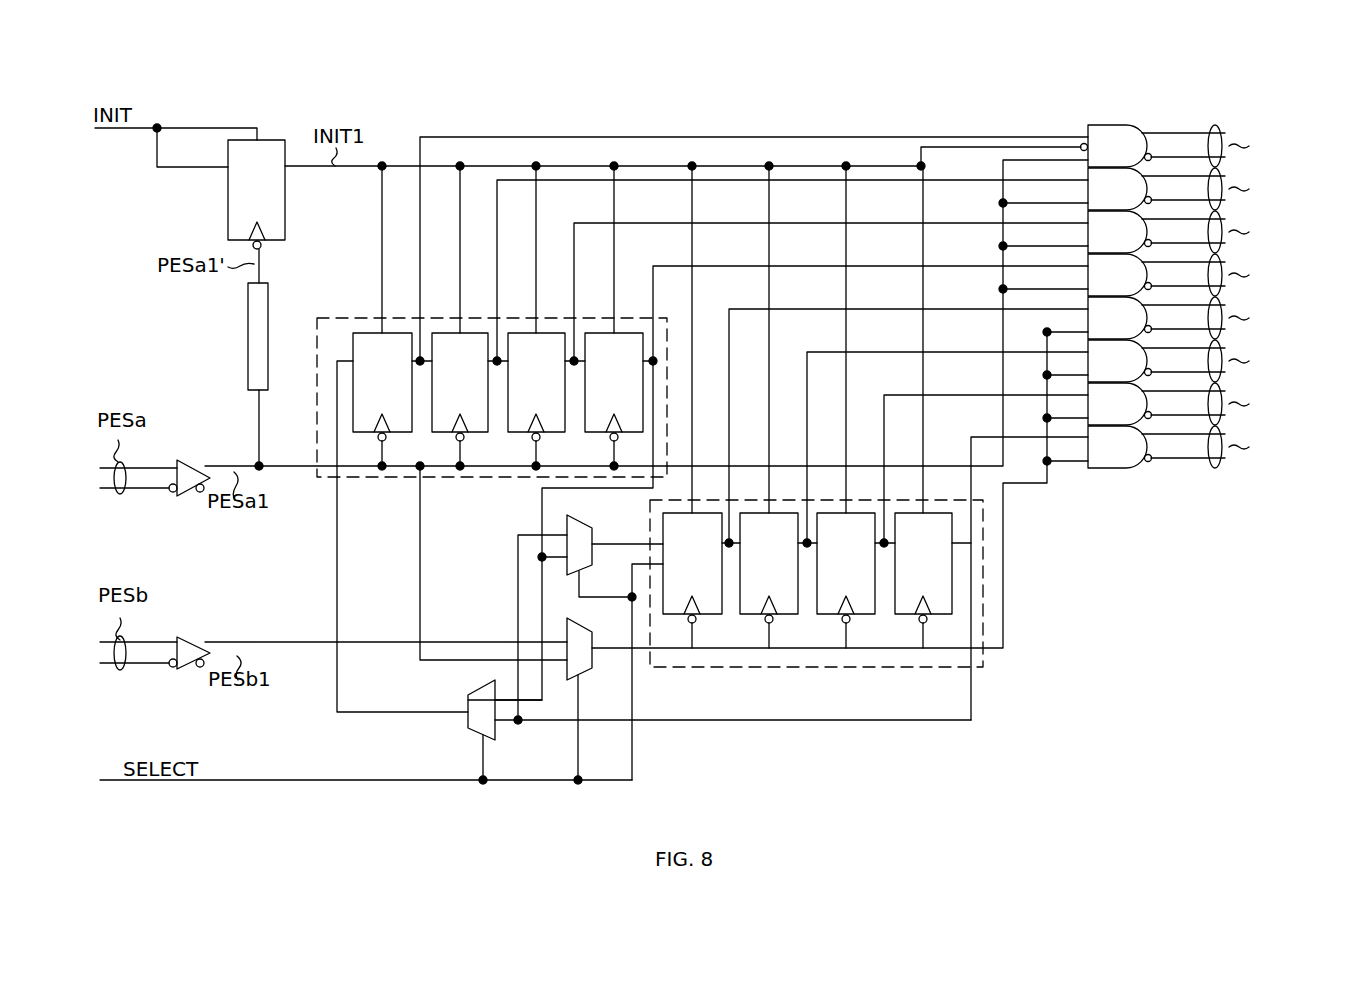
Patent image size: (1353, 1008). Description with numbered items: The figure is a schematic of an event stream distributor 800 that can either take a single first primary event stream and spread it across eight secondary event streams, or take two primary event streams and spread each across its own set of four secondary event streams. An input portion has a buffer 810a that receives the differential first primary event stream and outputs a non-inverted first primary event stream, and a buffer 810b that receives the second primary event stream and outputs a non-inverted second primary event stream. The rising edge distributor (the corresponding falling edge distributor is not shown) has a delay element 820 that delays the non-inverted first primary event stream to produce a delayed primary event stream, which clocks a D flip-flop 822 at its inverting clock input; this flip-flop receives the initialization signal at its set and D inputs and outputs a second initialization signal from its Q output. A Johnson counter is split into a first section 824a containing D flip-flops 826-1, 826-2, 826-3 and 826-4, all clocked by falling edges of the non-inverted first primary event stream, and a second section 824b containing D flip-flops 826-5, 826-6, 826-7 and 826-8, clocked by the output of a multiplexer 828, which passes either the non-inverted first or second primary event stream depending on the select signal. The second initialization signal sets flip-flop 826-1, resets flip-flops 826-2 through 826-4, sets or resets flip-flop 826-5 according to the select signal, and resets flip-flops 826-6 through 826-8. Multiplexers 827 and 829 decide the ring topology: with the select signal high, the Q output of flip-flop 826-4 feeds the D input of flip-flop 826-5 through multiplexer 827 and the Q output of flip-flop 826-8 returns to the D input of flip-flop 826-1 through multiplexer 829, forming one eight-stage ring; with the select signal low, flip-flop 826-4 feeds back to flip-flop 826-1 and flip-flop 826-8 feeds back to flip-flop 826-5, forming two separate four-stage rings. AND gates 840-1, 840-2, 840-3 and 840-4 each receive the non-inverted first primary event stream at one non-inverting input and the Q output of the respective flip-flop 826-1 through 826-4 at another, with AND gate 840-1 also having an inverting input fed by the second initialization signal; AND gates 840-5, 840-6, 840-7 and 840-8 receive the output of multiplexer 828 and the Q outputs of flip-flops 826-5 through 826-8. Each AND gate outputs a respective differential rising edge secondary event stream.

The event stream distributor 800 is at (790, 103).
The buffer 810a is at (185, 459).
The buffer 810b is at (186, 634).
The delay element 820 is at (270, 300).
The D flip-flop 822 is at (274, 136).
The first section of the Johnson counter 824a is at (318, 480).
The second section of the Johnson counter 824b is at (985, 655).
The D flip-flop 826-1 is at (383, 386).
The D flip-flop 826-2 is at (462, 386).
The D flip-flop 826-3 is at (538, 386).
The D flip-flop 826-4 is at (615, 386).
The D flip-flop 826-5 is at (693, 568).
The D flip-flop 826-6 is at (770, 568).
The D flip-flop 826-7 is at (847, 568).
The D flip-flop 826-8 is at (925, 568).
The multiplexer 827 is at (580, 516).
The multiplexer 828 is at (590, 672).
The multiplexer 829 is at (478, 687).
The AND gate 840-1 is at (1206, 146).
The AND gate 840-2 is at (1206, 189).
The AND gate 840-3 is at (1206, 232).
The AND gate 840-4 is at (1206, 275).
The AND gate 840-5 is at (1206, 318).
The AND gate 840-6 is at (1206, 361).
The AND gate 840-7 is at (1206, 404).
The AND gate 840-8 is at (1206, 447).